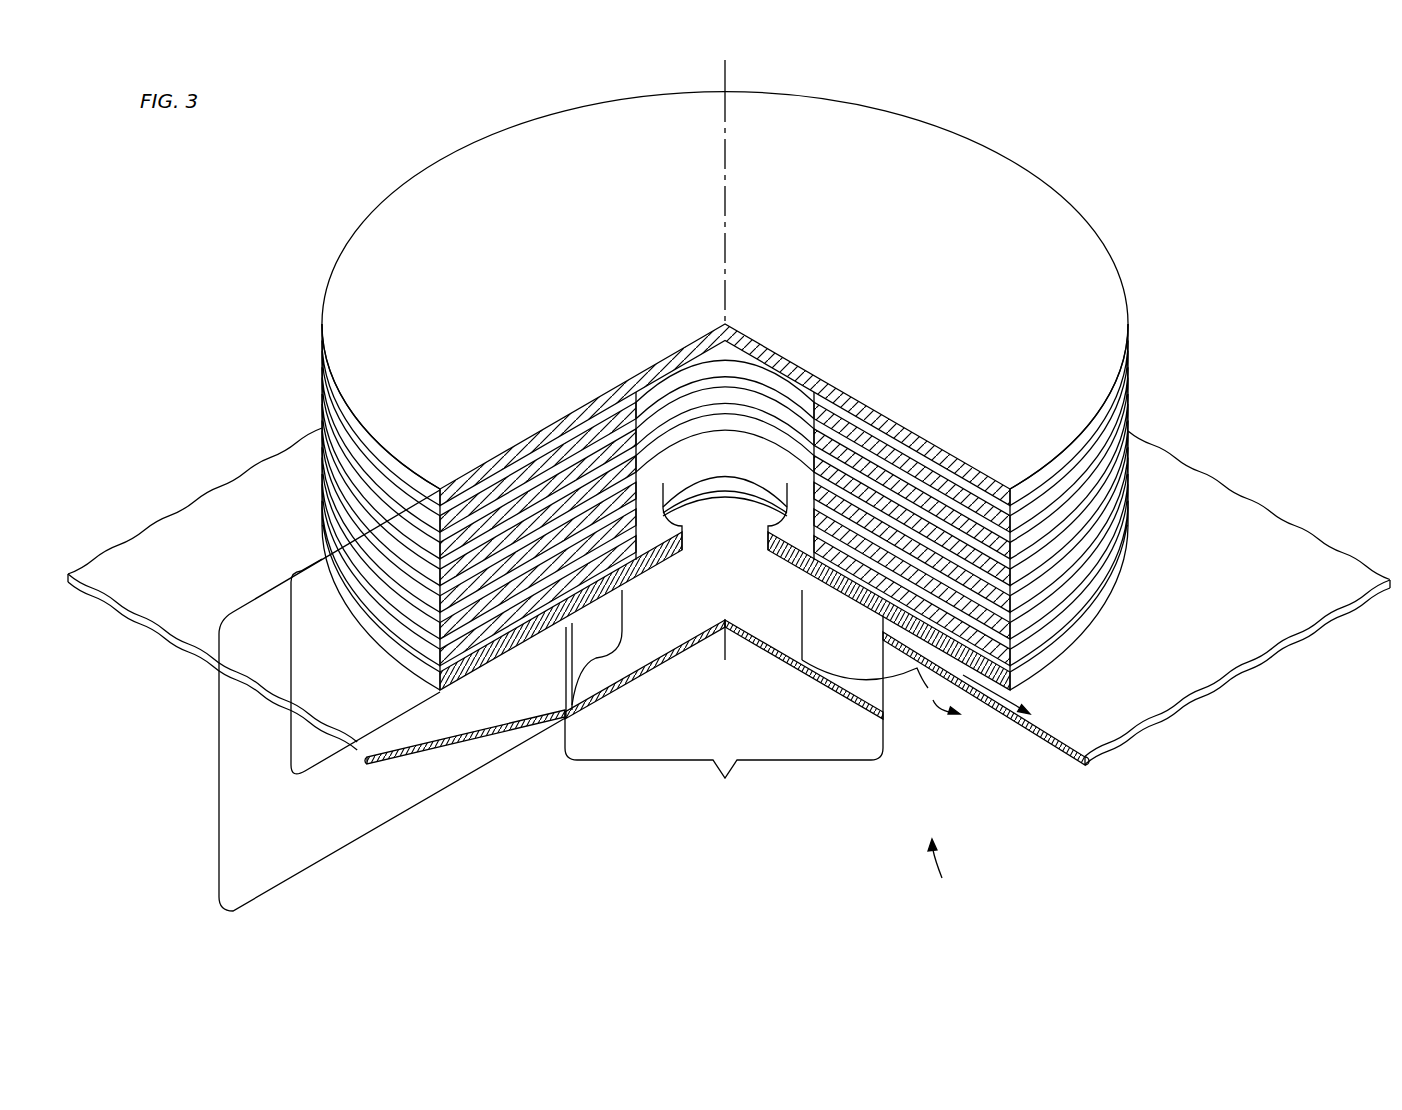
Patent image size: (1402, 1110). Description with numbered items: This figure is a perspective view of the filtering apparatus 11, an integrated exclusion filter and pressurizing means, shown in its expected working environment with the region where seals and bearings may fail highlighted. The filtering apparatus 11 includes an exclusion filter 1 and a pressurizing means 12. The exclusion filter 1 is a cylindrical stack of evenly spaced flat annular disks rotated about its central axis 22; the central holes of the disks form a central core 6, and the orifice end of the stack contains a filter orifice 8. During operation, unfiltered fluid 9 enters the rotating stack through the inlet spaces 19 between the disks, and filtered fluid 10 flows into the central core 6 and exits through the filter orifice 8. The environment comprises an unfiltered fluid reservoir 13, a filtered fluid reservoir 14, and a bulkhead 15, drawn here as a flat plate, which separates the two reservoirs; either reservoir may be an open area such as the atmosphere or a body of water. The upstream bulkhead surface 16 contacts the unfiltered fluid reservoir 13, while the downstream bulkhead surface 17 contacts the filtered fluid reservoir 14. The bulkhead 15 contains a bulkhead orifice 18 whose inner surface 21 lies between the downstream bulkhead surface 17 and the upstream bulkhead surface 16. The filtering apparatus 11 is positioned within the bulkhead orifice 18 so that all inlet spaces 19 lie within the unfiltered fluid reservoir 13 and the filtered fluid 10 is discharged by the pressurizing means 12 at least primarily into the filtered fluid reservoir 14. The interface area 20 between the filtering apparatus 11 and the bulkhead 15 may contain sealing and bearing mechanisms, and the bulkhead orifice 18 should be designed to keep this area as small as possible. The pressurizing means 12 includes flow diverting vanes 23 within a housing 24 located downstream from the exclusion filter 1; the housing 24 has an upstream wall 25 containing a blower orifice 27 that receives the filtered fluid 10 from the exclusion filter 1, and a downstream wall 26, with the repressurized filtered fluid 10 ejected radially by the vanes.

The exclusion filter 1 is at (366, 700).
The central core 6 is at (687, 454).
The filter orifice 8 is at (687, 568).
The unfiltered fluid 9 is at (770, 374).
The filtered fluid 10 is at (993, 695).
The filtering apparatus 11 is at (218, 768).
The pressurizing means 12 is at (290, 832).
The unfiltered fluid reservoir 13 is at (1107, 136).
The filtered fluid reservoir 14 is at (943, 871).
The bulkhead 15 is at (1156, 720).
The upstream bulkhead surface 16 is at (729, 596).
The downstream bulkhead surface 17 is at (1290, 608).
The bulkhead orifice 18 is at (724, 725).
The inlet spaces 19 is at (1012, 652).
The interface area 20 is at (574, 632).
The inner surface 21 is at (880, 645).
The central axis 22 is at (730, 78).
The flow diverting vanes 23 is at (846, 668).
The housing 24 is at (687, 648).
The upstream wall 25 is at (664, 578).
The downstream wall 26 is at (673, 652).
The blower orifice 27 is at (725, 500).